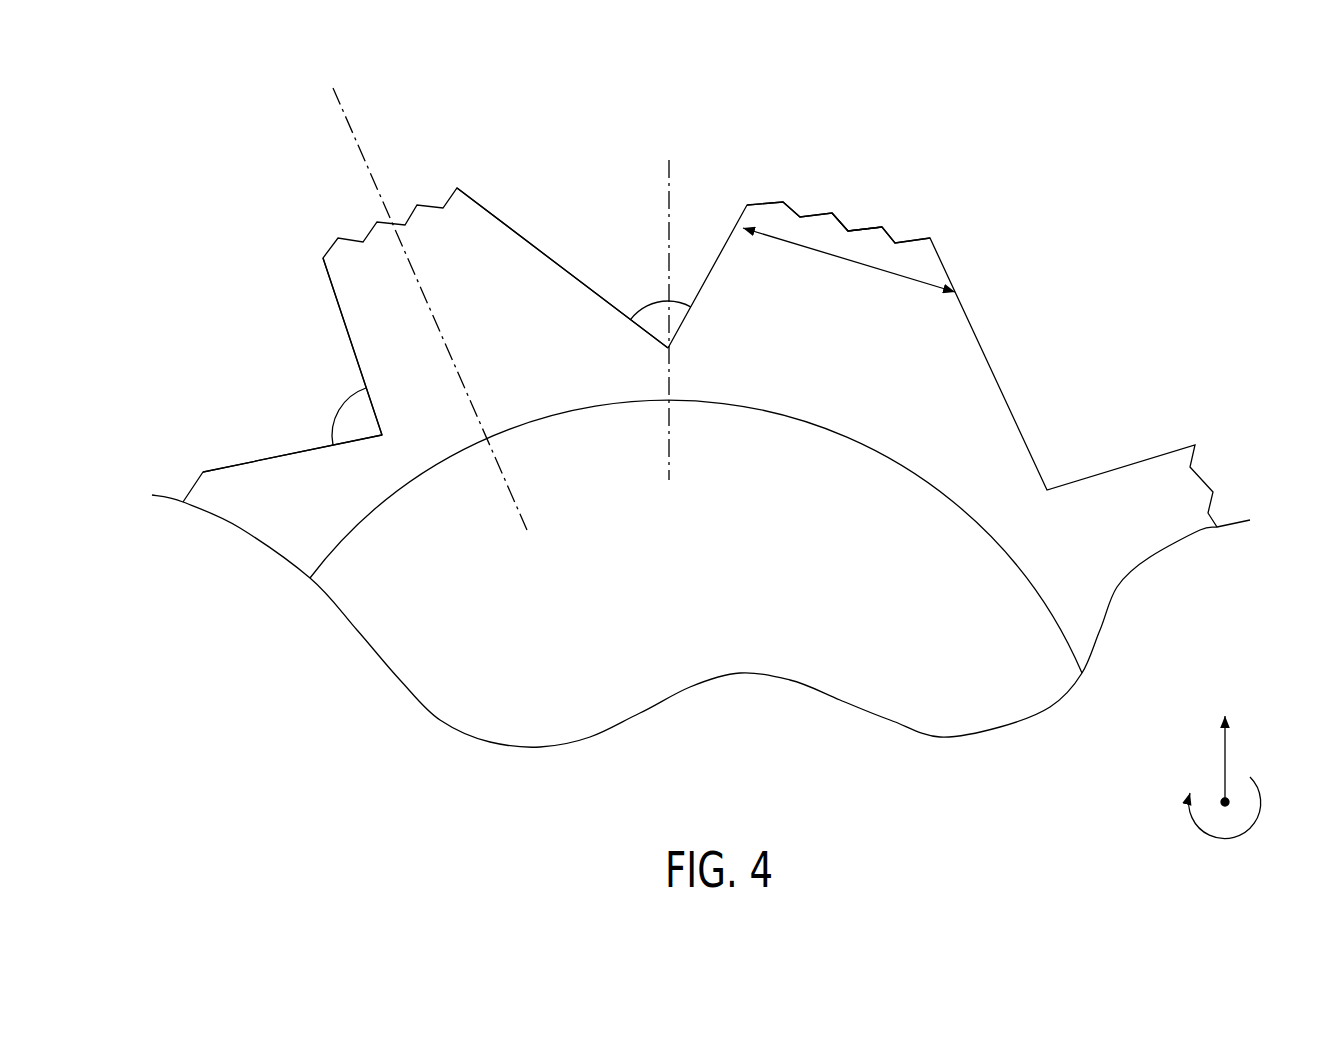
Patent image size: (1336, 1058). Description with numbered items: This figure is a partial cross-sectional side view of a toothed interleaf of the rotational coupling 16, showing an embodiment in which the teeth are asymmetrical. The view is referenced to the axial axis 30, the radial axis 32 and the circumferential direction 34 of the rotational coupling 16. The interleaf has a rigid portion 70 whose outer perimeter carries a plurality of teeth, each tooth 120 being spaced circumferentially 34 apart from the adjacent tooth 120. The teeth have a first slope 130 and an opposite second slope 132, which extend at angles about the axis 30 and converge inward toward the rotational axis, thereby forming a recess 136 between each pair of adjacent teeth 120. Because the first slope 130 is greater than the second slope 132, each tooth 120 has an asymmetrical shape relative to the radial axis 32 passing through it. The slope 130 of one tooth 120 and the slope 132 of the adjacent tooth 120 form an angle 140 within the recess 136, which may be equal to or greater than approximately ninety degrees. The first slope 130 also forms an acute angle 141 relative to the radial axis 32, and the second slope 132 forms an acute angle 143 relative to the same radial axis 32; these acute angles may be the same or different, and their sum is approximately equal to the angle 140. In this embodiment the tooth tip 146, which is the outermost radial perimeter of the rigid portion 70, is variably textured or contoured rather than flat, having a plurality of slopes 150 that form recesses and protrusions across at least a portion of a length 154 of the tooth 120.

The rotational coupling 16 is at (600, 110).
The axial axis 30 is at (1222, 795).
The radial axis 32 is at (353, 130).
The circumferential axis 34 is at (1237, 833).
The rigid portion 70 is at (964, 123).
The tooth 120 is at (472, 247).
The first slope 130 is at (290, 452).
The second slope 132 is at (350, 348).
The recess 136 is at (177, 292).
The angle 140 is at (335, 412).
The acute angle 141 is at (650, 307).
The acute angle 143 is at (678, 313).
The tooth tip 146 is at (821, 203).
The slope 150 is at (865, 223).
The length 154 is at (847, 258).